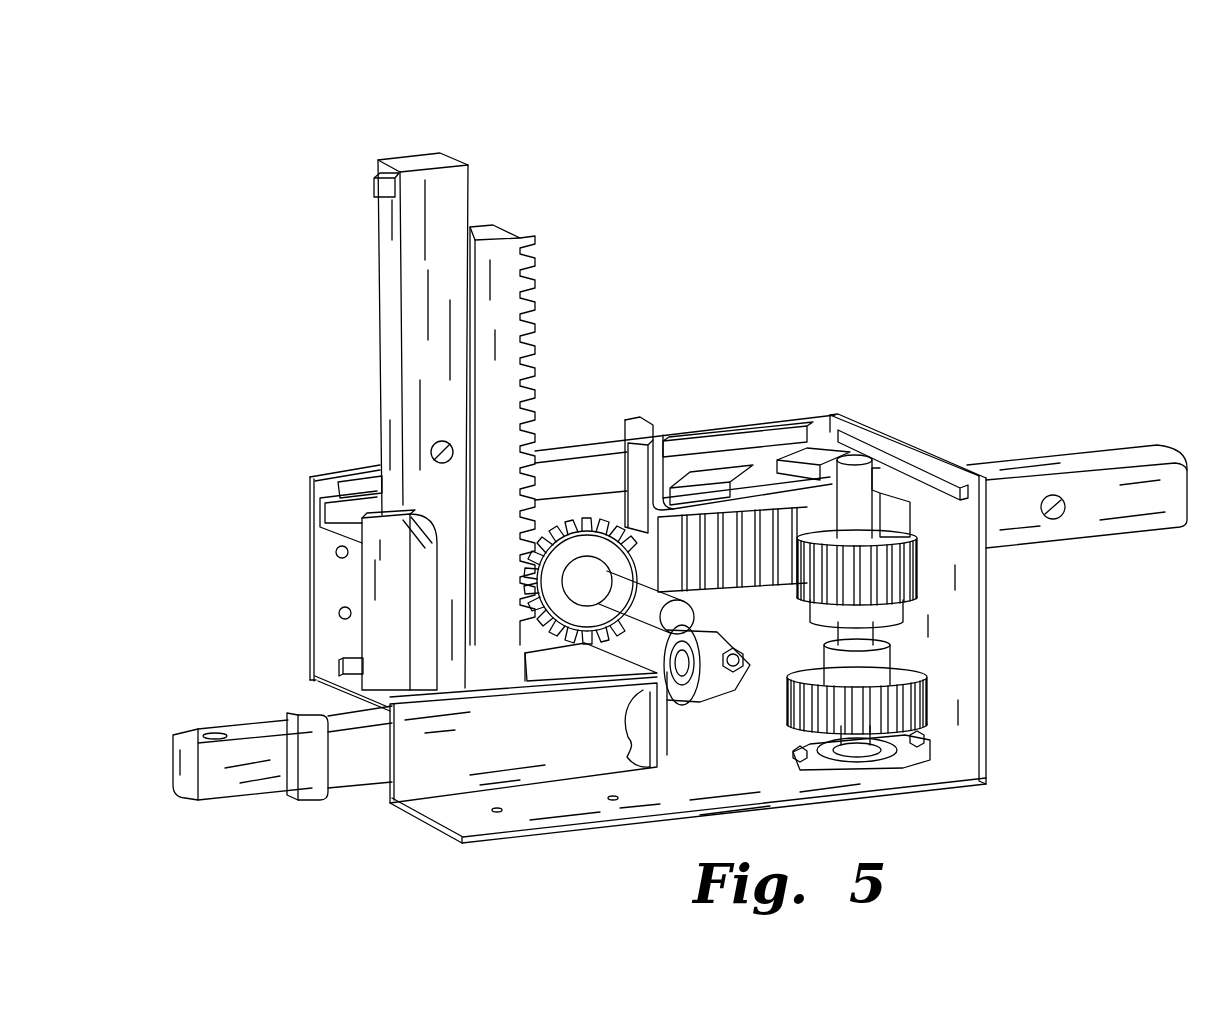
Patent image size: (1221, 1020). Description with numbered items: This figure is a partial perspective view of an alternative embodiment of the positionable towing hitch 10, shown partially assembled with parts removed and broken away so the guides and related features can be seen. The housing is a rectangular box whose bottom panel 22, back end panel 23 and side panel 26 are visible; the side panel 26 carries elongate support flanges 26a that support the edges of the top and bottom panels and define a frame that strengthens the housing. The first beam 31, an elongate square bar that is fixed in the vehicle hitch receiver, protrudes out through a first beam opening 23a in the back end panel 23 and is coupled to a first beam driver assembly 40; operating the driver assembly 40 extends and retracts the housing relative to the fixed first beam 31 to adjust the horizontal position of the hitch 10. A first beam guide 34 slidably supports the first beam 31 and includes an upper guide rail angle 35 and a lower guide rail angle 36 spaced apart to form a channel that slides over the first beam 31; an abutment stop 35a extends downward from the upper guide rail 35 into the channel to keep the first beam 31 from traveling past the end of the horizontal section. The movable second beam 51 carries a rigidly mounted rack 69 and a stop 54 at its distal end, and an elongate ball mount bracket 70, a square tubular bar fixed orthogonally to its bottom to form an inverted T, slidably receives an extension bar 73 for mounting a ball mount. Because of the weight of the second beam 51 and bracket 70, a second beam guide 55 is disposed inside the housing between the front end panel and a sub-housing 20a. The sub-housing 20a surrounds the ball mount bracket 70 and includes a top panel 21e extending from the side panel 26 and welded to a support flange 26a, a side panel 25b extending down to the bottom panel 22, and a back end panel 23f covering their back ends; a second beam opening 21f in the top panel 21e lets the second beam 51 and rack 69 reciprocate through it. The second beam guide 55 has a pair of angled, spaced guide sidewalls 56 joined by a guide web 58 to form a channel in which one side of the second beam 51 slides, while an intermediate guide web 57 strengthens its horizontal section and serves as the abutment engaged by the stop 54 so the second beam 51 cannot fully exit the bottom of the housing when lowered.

The positionable towing hitch 10 is at (238, 98).
The second beam 51 is at (443, 177).
The stop 54 is at (373, 186).
The rack gear 69 is at (503, 263).
The side panel 26 is at (563, 480).
The support flanges 26a is at (362, 480).
The second beam guide 55 is at (331, 577).
The intermediate guide web 57 is at (330, 542).
The guide sidewalls 56 is at (320, 512).
The guide web 58 is at (380, 632).
The extension bar 73 is at (217, 787).
The ball mount bracket 70 is at (352, 770).
The side panel 25b is at (522, 758).
The sub-housing 20a is at (432, 780).
The bottom panel 22 is at (748, 776).
The top panel 21e is at (505, 673).
The second beam opening 21f is at (527, 656).
The back end panel 23f is at (625, 755).
The lower guide rail angle 36 is at (670, 716).
The upper guide rail angle 35 is at (738, 480).
The abutment stop 35a is at (627, 460).
The first beam guide 34 is at (755, 470).
The first beam opening 23a is at (912, 510).
The first beam driver assembly 40 is at (947, 668).
The back end panel 23 is at (988, 647).
The first beam 31 is at (1155, 445).